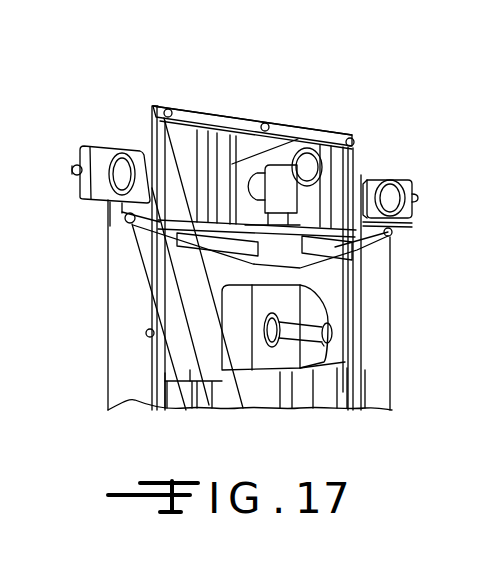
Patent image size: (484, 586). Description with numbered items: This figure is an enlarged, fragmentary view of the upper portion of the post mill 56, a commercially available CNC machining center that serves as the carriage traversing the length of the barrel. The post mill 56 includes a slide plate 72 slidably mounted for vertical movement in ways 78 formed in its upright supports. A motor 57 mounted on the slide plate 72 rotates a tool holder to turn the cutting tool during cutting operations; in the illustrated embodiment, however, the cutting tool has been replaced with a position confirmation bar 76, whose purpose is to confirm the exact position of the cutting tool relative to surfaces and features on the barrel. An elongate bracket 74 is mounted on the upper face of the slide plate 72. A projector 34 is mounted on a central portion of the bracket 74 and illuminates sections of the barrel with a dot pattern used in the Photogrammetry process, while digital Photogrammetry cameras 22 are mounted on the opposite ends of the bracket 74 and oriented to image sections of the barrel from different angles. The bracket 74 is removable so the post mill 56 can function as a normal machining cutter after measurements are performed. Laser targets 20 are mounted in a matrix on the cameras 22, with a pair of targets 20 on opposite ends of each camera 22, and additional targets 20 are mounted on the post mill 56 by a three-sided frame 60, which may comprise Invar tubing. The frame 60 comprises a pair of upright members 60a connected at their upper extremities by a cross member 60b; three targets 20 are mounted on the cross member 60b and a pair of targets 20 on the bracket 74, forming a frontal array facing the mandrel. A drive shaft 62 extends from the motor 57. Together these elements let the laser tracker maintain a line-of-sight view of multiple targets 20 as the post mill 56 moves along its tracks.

The laser target 20 is at (364, 180).
The digital Photogrammetry camera 22 is at (104, 145).
The projector 34 is at (247, 185).
The post mill 56 is at (118, 372).
The motor 57 is at (229, 382).
The three-sided frame 60 is at (155, 100).
The upright member 60a is at (133, 400).
The cross member 60b is at (189, 118).
The drive shaft 62 is at (283, 352).
The slide plate 72 is at (182, 410).
The elongate bracket 74 is at (258, 246).
The position confirmation bar 76 is at (320, 358).
The ways 78 is at (182, 151).